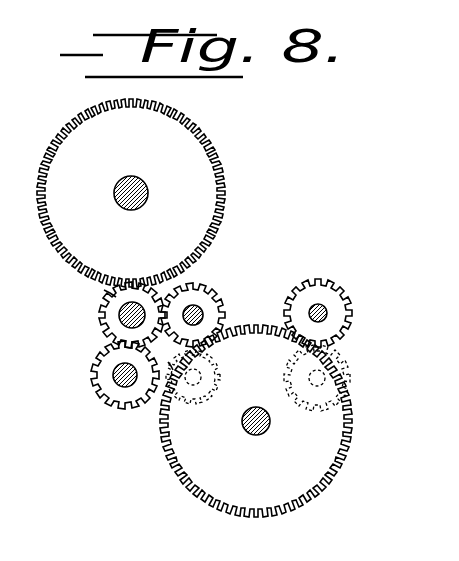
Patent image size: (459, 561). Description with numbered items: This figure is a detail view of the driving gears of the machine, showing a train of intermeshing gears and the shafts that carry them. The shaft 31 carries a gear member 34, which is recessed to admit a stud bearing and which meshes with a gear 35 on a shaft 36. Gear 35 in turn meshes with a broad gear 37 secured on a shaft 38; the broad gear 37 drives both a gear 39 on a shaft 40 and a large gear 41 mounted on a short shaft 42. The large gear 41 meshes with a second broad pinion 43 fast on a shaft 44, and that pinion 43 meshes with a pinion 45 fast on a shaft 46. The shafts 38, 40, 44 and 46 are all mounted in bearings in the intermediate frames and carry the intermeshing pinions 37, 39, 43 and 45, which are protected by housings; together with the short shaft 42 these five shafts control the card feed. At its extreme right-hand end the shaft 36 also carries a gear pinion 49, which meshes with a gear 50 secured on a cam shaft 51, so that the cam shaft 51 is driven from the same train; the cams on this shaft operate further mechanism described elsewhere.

The gear 50 is at (131, 193).
The cam shaft 51 is at (149, 190).
The gear pinion 49 is at (110, 294).
The gear 35 is at (118, 316).
The shaft 36 is at (120, 322).
The gear member 34 is at (104, 368).
The shaft 31 is at (119, 383).
The broad gear 37 is at (192, 300).
The shaft 38 is at (203, 311).
The shaft 40 is at (204, 373).
The gear 39 is at (173, 370).
The broad pinion 43 is at (322, 292).
The shaft 44 is at (327, 313).
The pinion 45 is at (336, 366).
The shaft 46 is at (317, 386).
The large gear 41 is at (256, 421).
The short shaft 42 is at (266, 430).